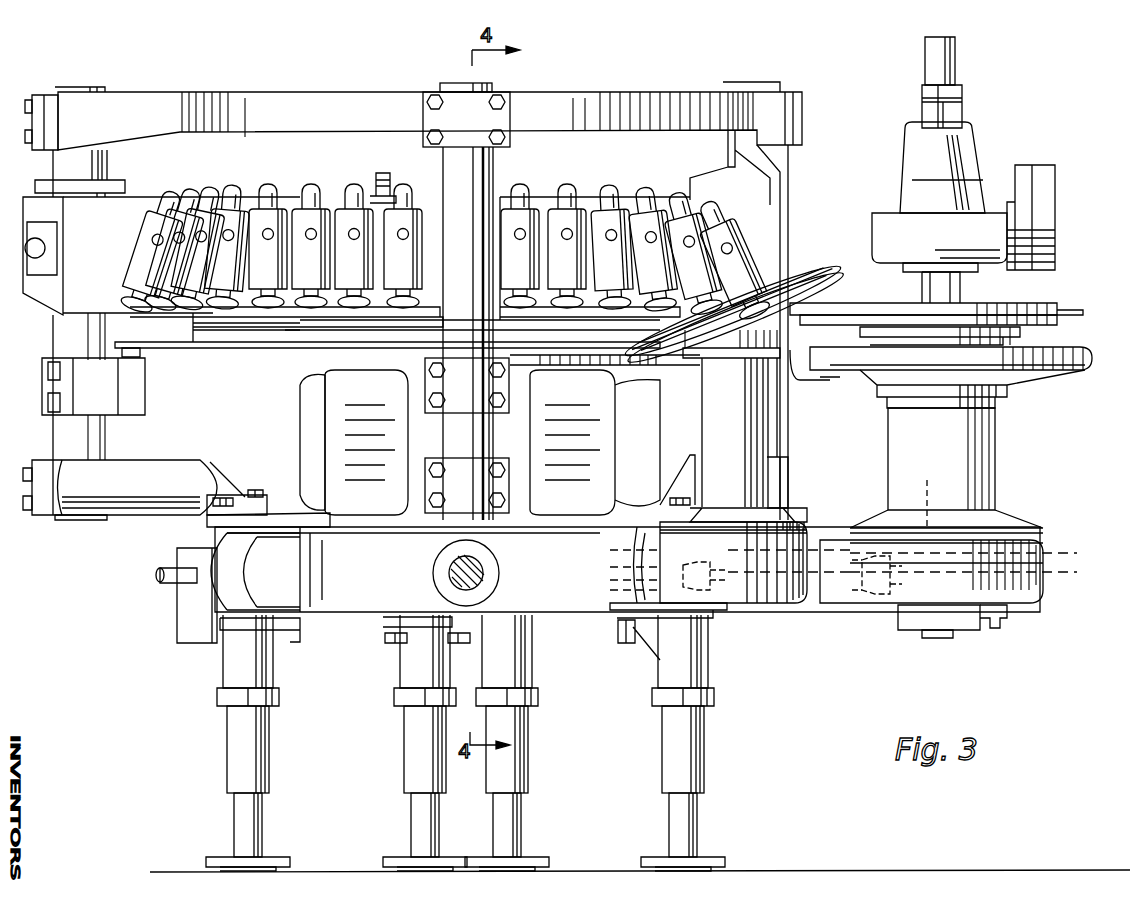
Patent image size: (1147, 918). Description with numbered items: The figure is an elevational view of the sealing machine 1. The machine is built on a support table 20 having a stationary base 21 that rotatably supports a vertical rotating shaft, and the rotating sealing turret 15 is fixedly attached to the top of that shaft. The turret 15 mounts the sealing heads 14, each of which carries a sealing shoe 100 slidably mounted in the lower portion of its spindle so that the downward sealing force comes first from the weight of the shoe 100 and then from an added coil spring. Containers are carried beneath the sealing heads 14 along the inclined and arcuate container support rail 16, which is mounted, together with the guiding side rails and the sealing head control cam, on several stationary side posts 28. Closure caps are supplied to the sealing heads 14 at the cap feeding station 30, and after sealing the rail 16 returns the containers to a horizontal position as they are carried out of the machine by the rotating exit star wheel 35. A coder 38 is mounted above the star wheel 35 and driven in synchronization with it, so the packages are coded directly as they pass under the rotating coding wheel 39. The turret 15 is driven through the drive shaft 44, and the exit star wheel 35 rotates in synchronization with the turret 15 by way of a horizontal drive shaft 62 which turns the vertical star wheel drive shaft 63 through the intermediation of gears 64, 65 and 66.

The sealing machine 1 is at (775, 86).
The sealing heads 14 is at (223, 213).
The rotating sealing turret 15 is at (572, 173).
The container support rail 16 is at (245, 345).
The support table 20 is at (600, 437).
The stationary base 21 is at (390, 585).
The stationary side posts 28 is at (100, 157).
The cap feeding station 30 is at (812, 262).
The exit star wheel 35 is at (1068, 305).
The coder 38 is at (1060, 200).
The coding wheel 39 is at (1045, 220).
The drive shaft 44 is at (484, 573).
The horizontal drive shaft 62 is at (790, 603).
The vertical star wheel drive shaft 63 is at (953, 528).
The gear 64 is at (722, 612).
The gear 65 is at (874, 608).
The gear 66 is at (1047, 563).
The sealing shoe 100 is at (312, 303).